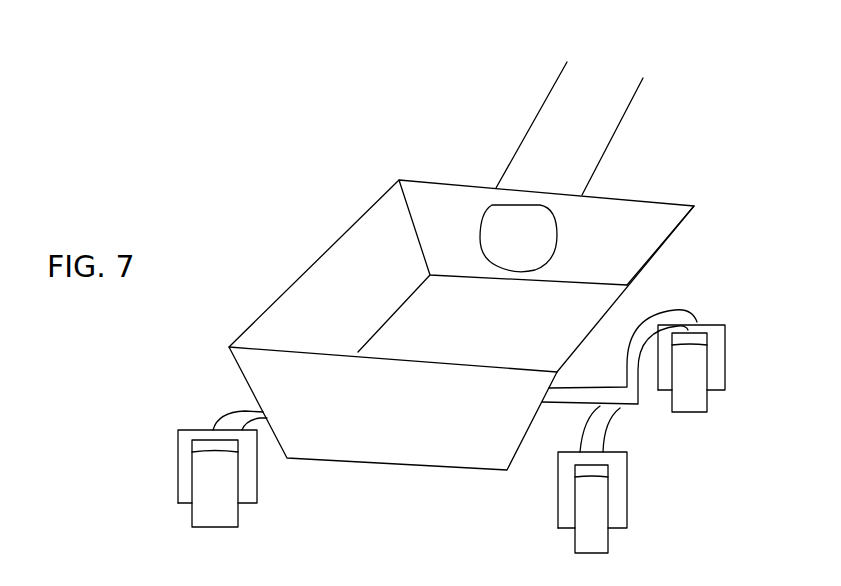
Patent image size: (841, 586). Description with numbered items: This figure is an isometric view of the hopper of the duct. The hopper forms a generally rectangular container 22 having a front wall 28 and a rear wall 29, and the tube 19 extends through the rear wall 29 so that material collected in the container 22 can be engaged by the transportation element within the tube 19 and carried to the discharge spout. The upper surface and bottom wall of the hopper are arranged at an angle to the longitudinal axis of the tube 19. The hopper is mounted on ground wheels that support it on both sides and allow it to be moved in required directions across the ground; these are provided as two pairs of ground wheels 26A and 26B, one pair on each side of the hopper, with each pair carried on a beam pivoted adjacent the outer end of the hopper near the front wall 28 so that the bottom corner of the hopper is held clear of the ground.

The container 22 is at (347, 225).
The tube 19 is at (620, 130).
The rear wall 29 is at (632, 238).
The front wall 28 is at (427, 452).
The pair of ground wheels 26A is at (193, 405).
The pair of ground wheels 26B is at (713, 302).